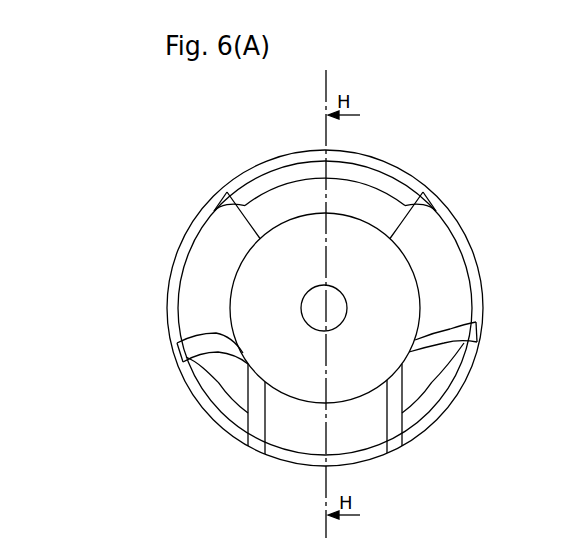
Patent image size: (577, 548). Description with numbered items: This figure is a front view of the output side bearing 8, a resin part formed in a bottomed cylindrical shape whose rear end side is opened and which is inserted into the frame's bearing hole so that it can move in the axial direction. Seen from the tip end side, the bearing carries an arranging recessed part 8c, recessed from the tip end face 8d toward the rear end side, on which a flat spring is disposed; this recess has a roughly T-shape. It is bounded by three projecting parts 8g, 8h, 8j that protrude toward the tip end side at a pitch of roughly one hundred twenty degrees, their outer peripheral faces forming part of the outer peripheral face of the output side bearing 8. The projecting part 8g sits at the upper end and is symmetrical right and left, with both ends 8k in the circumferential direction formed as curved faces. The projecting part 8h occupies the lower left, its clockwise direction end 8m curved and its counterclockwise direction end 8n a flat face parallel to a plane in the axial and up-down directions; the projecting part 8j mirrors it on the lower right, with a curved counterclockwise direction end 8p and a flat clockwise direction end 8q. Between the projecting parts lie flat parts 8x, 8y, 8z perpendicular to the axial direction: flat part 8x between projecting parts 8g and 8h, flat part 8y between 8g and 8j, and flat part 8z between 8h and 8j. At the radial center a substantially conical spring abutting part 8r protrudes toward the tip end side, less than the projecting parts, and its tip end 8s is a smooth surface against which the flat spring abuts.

The output side bearing 8 is at (408, 172).
The arranging recessed part 8c is at (452, 254).
The tip end face 8d is at (362, 206).
The projecting part 8g is at (253, 167).
The projecting part 8h is at (202, 392).
The projecting part 8j is at (435, 410).
The both ends of the projecting part 8k is at (219, 224).
The clockwise direction end 8m is at (203, 336).
The counterclockwise direction end 8n is at (266, 408).
The counterclockwise direction end 8p is at (479, 321).
The clockwise direction end 8q is at (386, 416).
The spring abutting part 8r is at (395, 312).
The tip end of the spring abutting part 8s is at (315, 298).
The flat part 8x is at (213, 290).
The flat part 8y is at (457, 307).
The flat part 8z is at (308, 432).